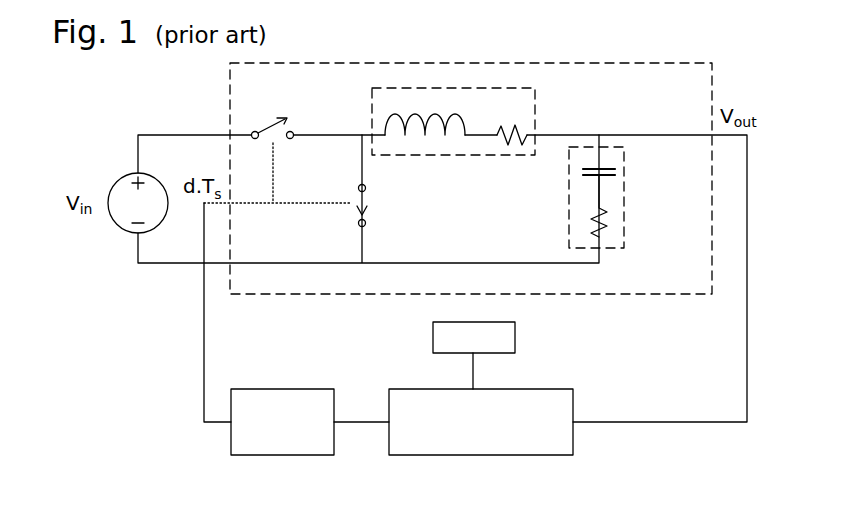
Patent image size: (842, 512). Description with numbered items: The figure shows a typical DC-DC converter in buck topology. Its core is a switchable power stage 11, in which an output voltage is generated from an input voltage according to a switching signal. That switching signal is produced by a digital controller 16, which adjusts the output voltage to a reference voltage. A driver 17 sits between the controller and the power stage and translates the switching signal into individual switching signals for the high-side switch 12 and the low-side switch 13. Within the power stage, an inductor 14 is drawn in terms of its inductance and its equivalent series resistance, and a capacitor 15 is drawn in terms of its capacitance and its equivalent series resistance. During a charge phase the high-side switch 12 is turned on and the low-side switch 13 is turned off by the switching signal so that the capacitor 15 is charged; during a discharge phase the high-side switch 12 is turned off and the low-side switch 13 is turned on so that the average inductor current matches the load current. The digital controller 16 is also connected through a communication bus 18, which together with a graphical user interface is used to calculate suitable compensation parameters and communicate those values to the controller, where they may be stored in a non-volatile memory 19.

The switchable power stage 11 is at (582, 63).
The high-side switch 12 is at (266, 126).
The low-side switch 13 is at (365, 200).
The inductor 14 is at (485, 155).
The capacitor 15 is at (625, 192).
The digital controller 16 is at (470, 455).
The driver 17 is at (272, 455).
The communication bus 18 is at (473, 365).
The non-volatile memory 19 is at (515, 340).